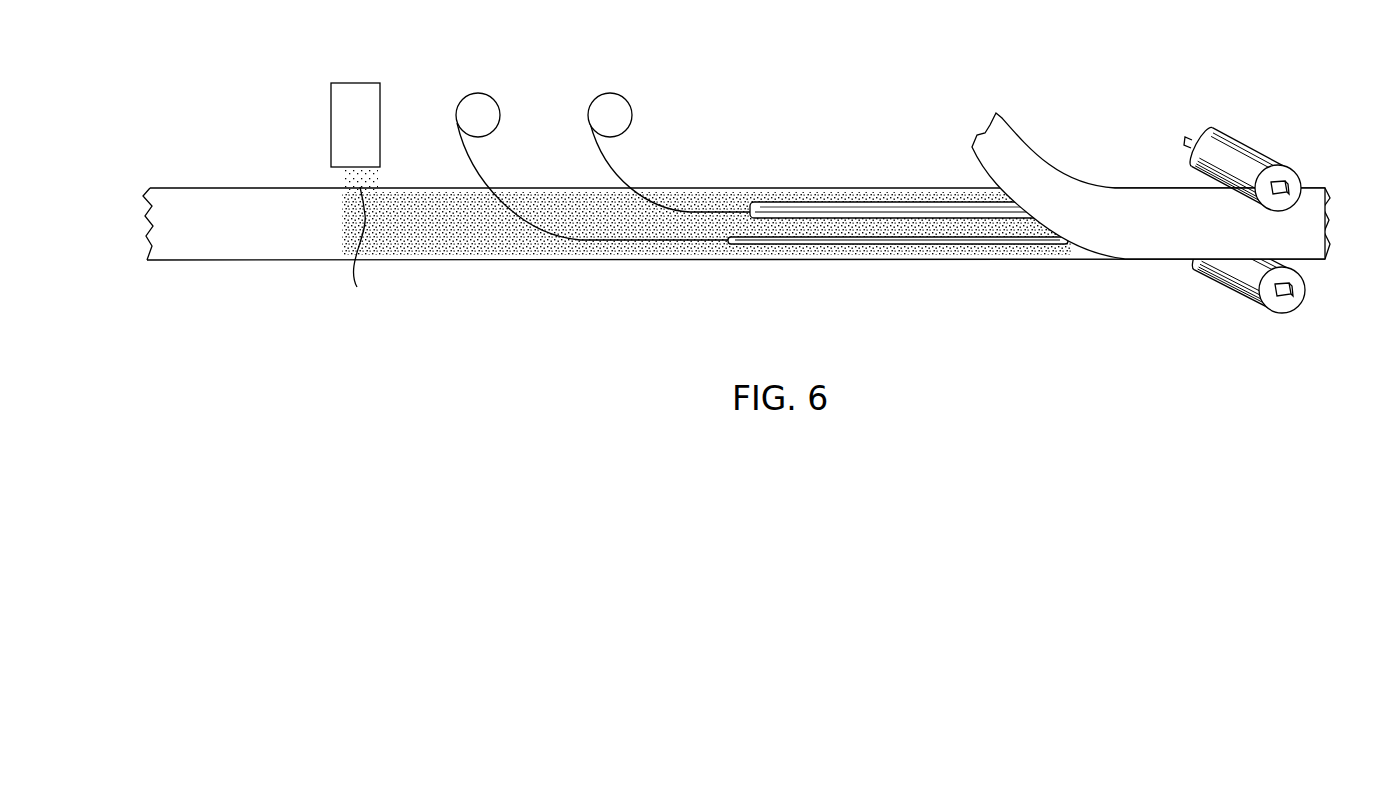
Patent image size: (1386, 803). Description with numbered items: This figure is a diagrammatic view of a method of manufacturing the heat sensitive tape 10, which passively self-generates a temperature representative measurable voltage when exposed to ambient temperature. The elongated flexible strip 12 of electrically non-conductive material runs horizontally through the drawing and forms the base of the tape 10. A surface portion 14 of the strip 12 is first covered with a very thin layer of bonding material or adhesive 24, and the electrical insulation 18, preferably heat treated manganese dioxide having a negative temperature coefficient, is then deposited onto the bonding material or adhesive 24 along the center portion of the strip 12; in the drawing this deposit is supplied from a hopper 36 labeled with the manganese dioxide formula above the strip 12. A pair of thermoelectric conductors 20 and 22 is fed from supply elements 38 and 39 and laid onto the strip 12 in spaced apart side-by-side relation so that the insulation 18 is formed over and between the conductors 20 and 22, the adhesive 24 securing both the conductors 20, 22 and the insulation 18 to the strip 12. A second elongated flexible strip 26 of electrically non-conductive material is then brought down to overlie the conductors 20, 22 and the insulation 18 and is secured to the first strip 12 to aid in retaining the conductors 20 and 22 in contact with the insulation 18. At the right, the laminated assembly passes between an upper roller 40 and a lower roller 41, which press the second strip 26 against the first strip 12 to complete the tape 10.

The heat sensitive tape 10 is at (1267, 137).
The elongated flexible strip 12 is at (557, 258).
The surface portion 14 is at (458, 243).
The electrical insulation 18 is at (362, 249).
The thermoelectric conductor 20 is at (620, 172).
The thermoelectric conductor 22 is at (480, 172).
The thin layer of bonding material or adhesive 24 is at (340, 203).
The second elongated flexible strip 26 is at (1065, 185).
The powder hopper 36 is at (368, 118).
The terminal 38 is at (488, 104).
The terminal 39 is at (628, 104).
The upper pressure roller 40 is at (1285, 177).
The lower pressure roller 41 is at (1270, 305).